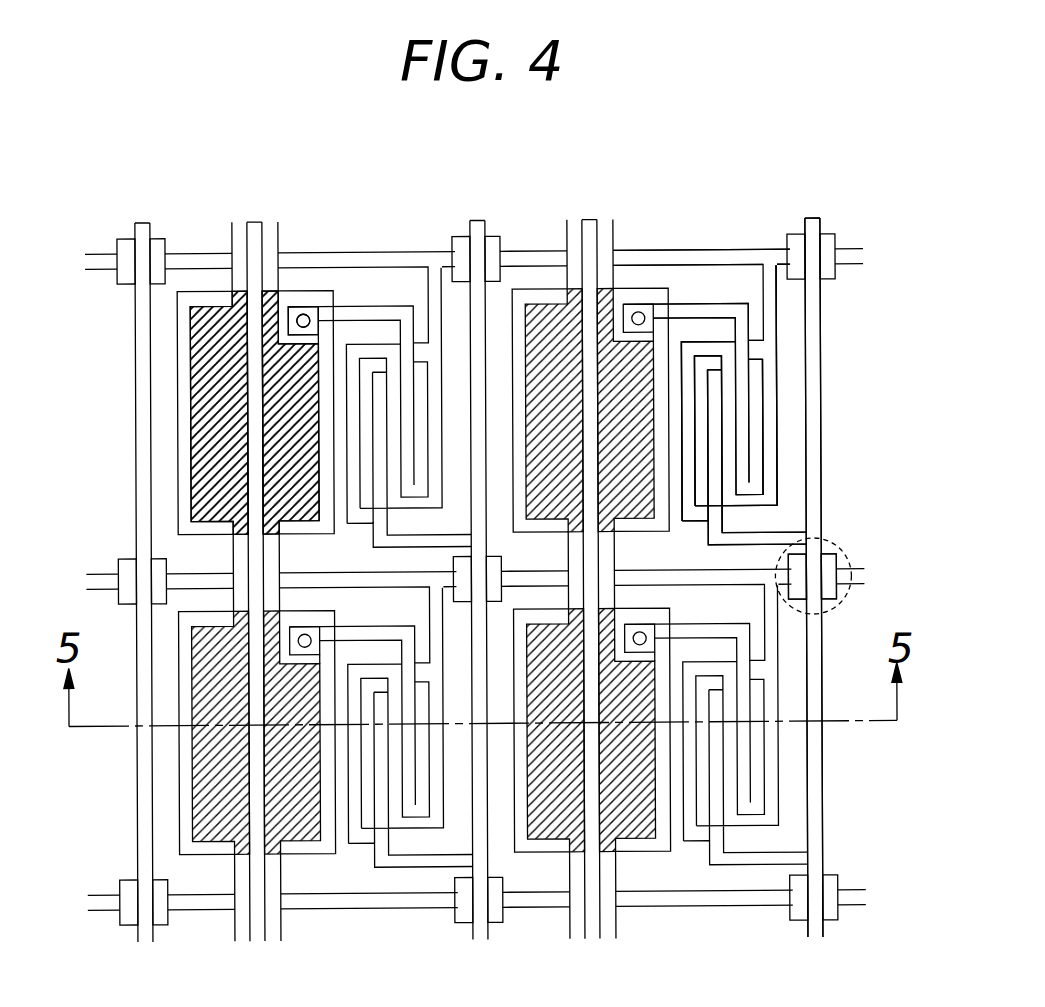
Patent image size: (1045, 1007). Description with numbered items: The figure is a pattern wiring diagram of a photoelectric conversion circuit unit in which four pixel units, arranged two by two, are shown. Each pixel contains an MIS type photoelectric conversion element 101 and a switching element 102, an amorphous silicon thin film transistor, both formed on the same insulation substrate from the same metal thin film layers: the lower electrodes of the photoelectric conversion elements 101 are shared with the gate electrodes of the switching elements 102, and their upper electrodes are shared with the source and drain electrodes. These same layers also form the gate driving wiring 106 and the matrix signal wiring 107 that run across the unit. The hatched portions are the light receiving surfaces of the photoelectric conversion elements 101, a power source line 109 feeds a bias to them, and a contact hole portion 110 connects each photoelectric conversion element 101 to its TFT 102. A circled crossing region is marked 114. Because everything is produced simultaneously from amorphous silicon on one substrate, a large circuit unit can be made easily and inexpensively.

The photoelectric conversion element 101 is at (205, 457).
The switching element 102 is at (735, 440).
The gate driving wiring 106 is at (694, 255).
The matrix signal wiring 107 is at (815, 350).
The power source line 109 is at (257, 370).
The contact hole portion 110 is at (303, 314).
The crossover portion 114 is at (850, 543).